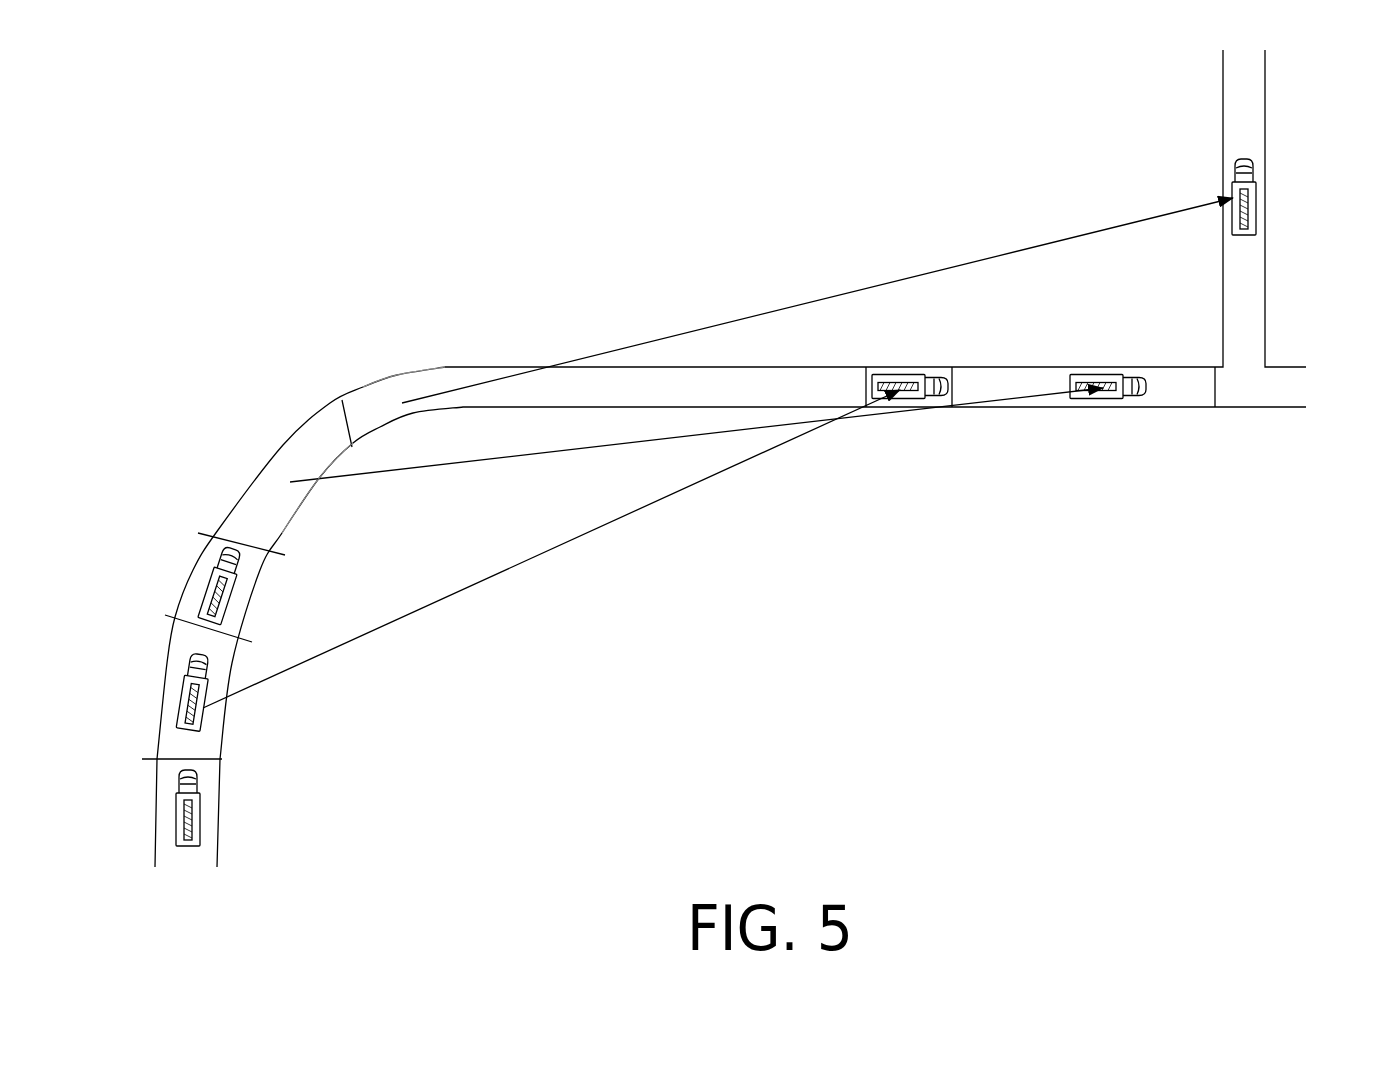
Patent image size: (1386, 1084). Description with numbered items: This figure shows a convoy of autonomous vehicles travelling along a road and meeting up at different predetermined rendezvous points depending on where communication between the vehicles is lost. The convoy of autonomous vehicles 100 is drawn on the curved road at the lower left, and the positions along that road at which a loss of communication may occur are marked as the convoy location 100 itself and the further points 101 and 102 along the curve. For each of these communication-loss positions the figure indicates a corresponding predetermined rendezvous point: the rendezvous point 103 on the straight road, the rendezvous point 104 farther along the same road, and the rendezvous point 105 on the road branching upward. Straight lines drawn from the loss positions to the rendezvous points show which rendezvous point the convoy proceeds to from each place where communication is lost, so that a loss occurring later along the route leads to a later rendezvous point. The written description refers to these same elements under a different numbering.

The host vehicle 100 is at (178, 703).
The road segment 101 is at (287, 476).
The road segment 102 is at (395, 398).
The second vehicle 103 is at (889, 370).
The third vehicle 104 is at (1090, 370).
The fourth vehicle 105 is at (1247, 212).